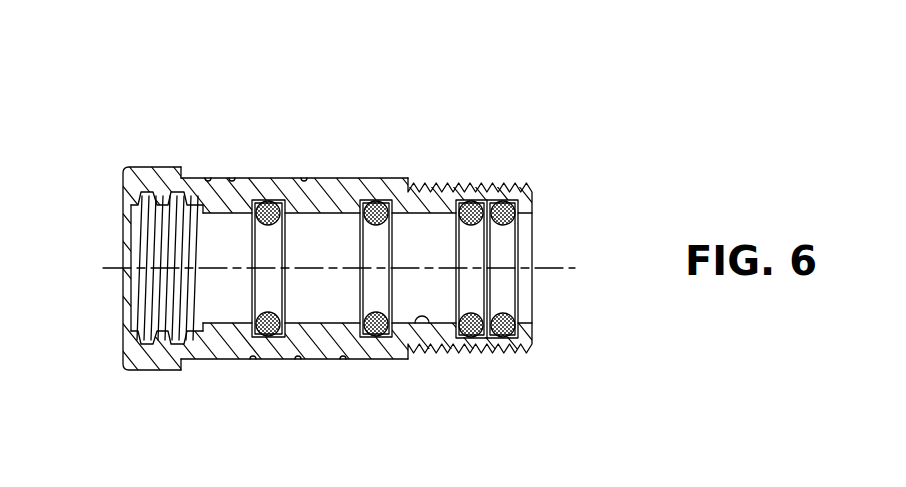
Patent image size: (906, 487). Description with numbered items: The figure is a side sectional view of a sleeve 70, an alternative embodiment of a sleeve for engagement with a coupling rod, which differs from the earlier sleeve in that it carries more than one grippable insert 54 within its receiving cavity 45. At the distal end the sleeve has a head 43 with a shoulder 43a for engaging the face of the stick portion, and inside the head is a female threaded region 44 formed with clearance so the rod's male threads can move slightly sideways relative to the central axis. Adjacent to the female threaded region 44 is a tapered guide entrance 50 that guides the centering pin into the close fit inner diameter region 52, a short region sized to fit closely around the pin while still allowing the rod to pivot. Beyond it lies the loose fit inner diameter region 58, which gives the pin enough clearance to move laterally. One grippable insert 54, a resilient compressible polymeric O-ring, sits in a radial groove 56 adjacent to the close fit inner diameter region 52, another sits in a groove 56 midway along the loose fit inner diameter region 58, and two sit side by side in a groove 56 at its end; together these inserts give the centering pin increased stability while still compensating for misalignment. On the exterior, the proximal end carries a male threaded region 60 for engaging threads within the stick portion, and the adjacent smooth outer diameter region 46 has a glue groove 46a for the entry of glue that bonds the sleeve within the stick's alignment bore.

The head 43 is at (152, 166).
The shoulder 43a is at (191, 178).
The female threaded region 44 is at (131, 228).
The receiving cavity 45 is at (108, 283).
The smooth outer diameter region 46 is at (322, 360).
The glue groove 46a is at (345, 362).
The tapered guide entrance 50 is at (237, 216).
The close fit inner diameter region 52 is at (239, 213).
The grippable insert 54 is at (381, 201).
The radial groove 56 is at (263, 199).
The loose fit inner diameter region 58 is at (427, 327).
The male threaded region 60 is at (485, 185).
The sleeve 70 is at (418, 112).